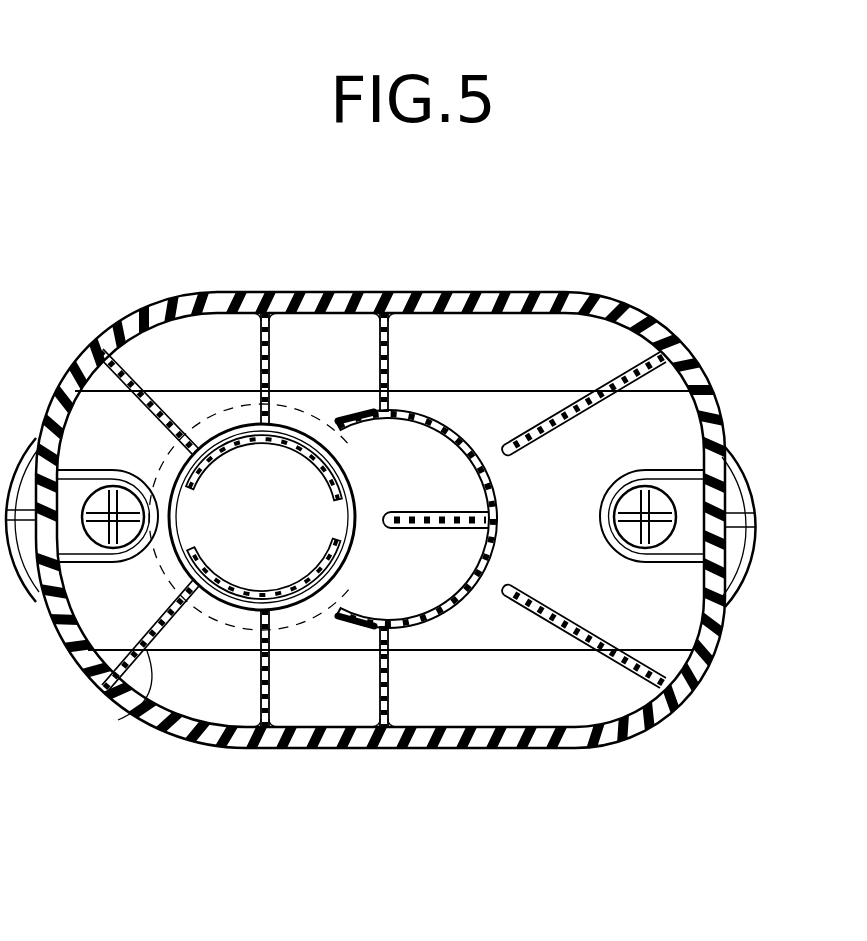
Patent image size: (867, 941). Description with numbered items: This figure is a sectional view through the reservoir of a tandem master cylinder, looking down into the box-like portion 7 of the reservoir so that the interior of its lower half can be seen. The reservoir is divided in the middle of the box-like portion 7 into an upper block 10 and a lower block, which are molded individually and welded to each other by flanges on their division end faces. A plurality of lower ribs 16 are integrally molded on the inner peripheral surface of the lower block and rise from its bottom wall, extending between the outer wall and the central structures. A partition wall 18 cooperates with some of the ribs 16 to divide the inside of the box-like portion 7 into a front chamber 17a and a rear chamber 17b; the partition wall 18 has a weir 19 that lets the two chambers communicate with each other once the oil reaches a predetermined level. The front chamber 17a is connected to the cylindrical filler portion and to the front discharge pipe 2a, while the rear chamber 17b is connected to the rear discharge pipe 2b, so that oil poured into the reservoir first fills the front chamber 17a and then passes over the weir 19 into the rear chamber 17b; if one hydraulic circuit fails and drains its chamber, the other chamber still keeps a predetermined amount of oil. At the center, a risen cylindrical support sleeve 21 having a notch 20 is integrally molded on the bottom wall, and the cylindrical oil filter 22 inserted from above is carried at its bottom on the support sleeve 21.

The box-like portion 7 is at (633, 312).
The upper block 10 is at (712, 392).
The front discharge pipe 2a is at (107, 535).
The rear discharge pipe 2b is at (632, 537).
The lower ribs 16 is at (147, 420).
The front chamber 17a is at (195, 707).
The rear chamber 17b is at (507, 707).
The partition wall 18 is at (497, 478).
The weir 19 is at (497, 523).
The notch 20 is at (178, 493).
The support sleeve 21 is at (227, 607).
The oil filter 22 is at (233, 410).